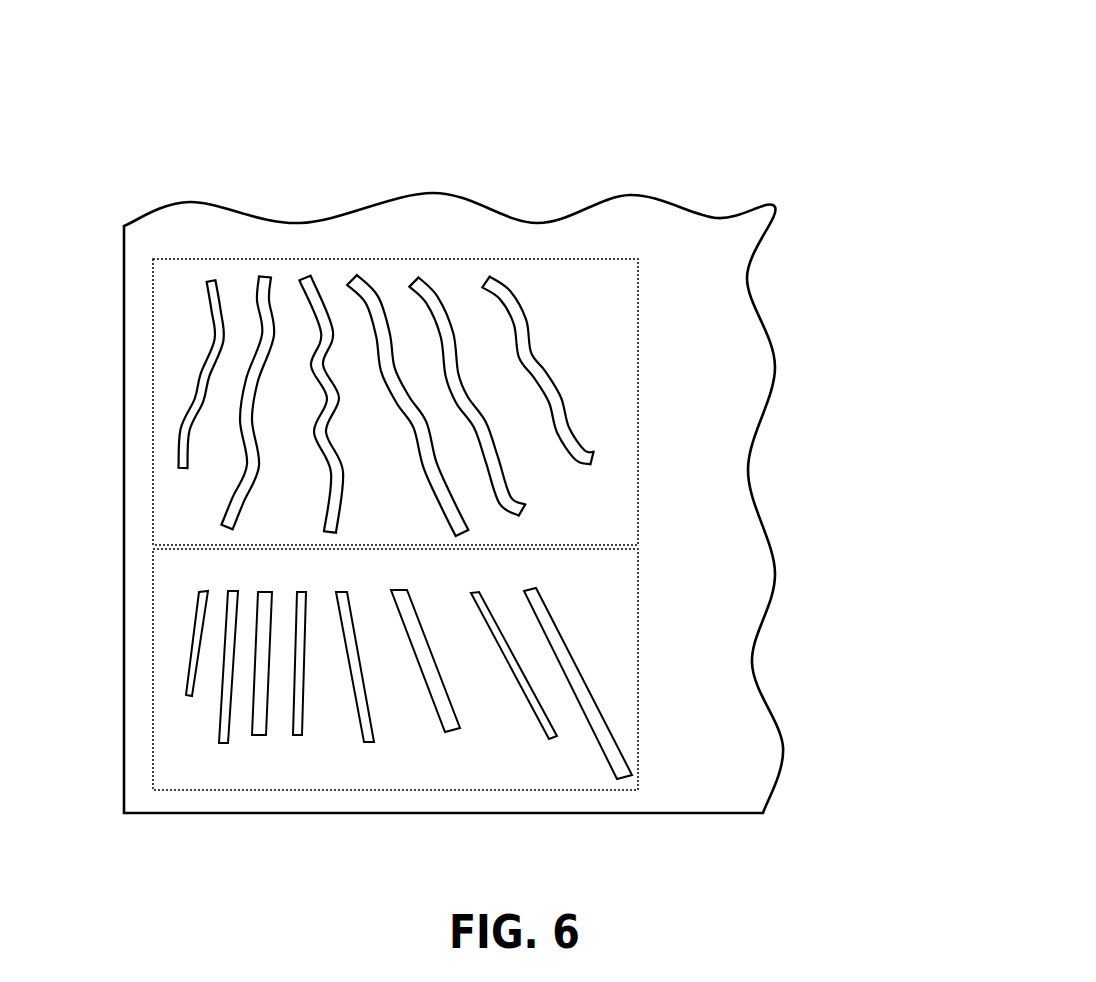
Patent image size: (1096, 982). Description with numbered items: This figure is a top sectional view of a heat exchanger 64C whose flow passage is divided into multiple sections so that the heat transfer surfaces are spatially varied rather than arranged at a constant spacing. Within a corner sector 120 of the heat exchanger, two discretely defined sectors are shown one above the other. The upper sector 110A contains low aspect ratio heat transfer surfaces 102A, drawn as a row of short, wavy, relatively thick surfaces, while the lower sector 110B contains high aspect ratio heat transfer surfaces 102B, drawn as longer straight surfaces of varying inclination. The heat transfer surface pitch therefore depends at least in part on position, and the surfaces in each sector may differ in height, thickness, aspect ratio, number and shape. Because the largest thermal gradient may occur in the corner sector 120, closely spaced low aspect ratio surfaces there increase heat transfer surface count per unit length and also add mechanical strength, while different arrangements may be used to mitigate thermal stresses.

The sensor assembly 64C is at (855, 89).
The corner sector 120 is at (106, 795).
The sector 110A is at (640, 412).
The sector 110B is at (640, 652).
The heat transfer surfaces 102A is at (196, 373).
The heat transfer surfaces 102B is at (193, 639).